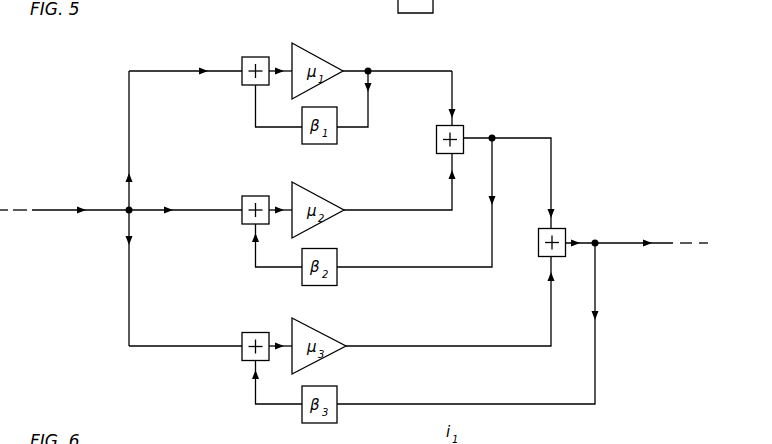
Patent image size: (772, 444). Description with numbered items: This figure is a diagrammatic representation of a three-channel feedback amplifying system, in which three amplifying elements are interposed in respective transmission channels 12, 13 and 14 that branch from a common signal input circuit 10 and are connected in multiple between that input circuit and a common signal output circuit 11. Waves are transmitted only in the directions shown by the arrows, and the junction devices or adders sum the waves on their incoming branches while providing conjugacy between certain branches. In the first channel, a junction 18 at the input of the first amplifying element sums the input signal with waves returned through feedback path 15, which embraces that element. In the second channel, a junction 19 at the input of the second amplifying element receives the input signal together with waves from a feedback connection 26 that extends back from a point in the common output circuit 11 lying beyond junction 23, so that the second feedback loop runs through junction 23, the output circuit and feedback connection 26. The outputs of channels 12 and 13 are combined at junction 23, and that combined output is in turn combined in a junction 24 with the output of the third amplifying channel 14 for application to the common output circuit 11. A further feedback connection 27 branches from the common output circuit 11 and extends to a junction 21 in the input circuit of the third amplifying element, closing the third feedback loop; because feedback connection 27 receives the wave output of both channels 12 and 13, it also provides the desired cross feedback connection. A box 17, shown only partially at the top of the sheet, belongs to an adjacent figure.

The common signal input circuit 10 is at (45, 210).
The common signal output circuit 11 is at (617, 243).
The transmission channel 12 is at (166, 71).
The transmission channel 13 is at (188, 210).
The amplifying channel 14 is at (163, 346).
The feedback path 15 is at (368, 127).
The box 17 is at (440, 2).
The junction 18 is at (255, 57).
The junction 19 is at (248, 196).
The junction 21 is at (247, 333).
The junction 23 is at (458, 125).
The junction 24 is at (560, 228).
The feedback connection 26 is at (405, 267).
The feedback connection 27 is at (460, 404).